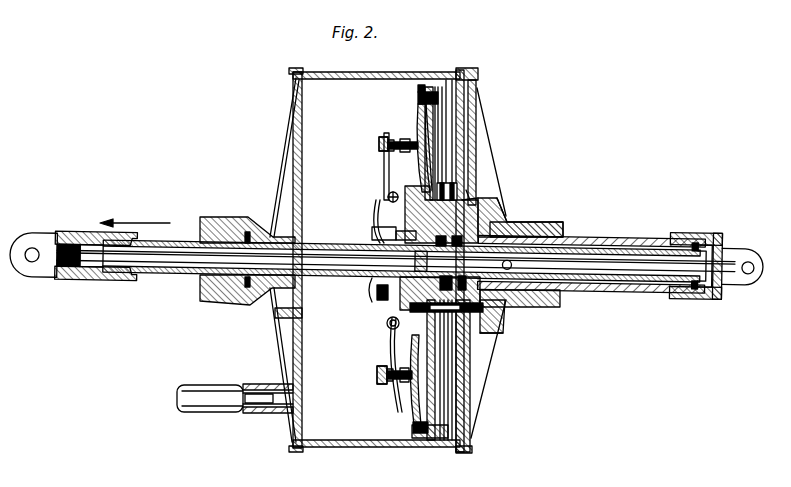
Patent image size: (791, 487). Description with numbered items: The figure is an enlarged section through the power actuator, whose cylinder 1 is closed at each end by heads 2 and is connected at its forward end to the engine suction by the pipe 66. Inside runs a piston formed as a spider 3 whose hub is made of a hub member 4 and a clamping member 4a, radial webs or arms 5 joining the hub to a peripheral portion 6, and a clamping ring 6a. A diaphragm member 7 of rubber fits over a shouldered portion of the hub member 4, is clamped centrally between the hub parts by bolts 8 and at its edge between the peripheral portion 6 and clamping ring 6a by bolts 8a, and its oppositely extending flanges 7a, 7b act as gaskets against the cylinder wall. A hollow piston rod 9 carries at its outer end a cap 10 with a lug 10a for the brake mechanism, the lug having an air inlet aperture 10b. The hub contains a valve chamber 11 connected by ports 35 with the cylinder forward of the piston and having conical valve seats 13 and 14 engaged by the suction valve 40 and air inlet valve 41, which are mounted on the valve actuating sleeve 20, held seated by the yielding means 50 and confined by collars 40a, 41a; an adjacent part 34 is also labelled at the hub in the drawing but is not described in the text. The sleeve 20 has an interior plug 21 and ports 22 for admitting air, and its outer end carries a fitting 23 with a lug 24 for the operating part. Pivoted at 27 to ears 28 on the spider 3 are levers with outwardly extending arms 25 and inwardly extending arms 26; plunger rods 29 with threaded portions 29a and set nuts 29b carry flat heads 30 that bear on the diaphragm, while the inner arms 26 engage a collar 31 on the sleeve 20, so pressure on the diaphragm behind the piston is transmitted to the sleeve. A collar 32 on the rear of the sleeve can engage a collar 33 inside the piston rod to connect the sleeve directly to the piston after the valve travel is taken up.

The cylinder 1 is at (386, 62).
The heads 2 is at (293, 127).
The spider 3 is at (410, 400).
The hub member 4 is at (410, 222).
The clamping member of the hub 4a is at (462, 199).
The radial webs or arms 5 is at (418, 114).
The peripheral portion 6 is at (419, 100).
The clamping ring 6a is at (437, 123).
The diaphragm member 7 is at (459, 362).
The flange 7a is at (408, 446).
The flange 7b is at (446, 447).
The bolts 8 is at (452, 333).
The bolts 8a is at (464, 93).
The hollow piston rod 9 is at (607, 244).
The cap 10 is at (711, 248).
The lug 10a is at (745, 281).
The air inlet aperture 10b is at (732, 256).
The valve chamber 11 is at (490, 306).
The conical valve seat 13 is at (453, 347).
The conical valve seat 14 is at (516, 306).
The valve actuating sleeve 20 is at (175, 262).
The interior plug 21 is at (404, 288).
The ports 22 is at (512, 263).
The fitting 23 is at (76, 272).
The lug 24 is at (32, 268).
The outwardly extending arm 25 is at (384, 170).
The inwardly extending arm 26 is at (377, 208).
The pivot 27 is at (388, 196).
The ears 28 is at (392, 343).
The plunger rods 29 is at (405, 152).
The threaded portions 29a is at (389, 139).
The set nuts 29b is at (380, 145).
The head 30 is at (425, 138).
The collar 31 is at (375, 288).
The collar 32 is at (698, 292).
The collar 33 is at (692, 240).
The plate 34 is at (463, 198).
The ports 35 is at (396, 236).
The suction valve 40 is at (485, 207).
The collar 40a is at (376, 230).
The air inlet valve 41 is at (502, 216).
The collar 41a is at (512, 219).
The yielding means 50 is at (470, 316).
The pipe 66 is at (226, 386).